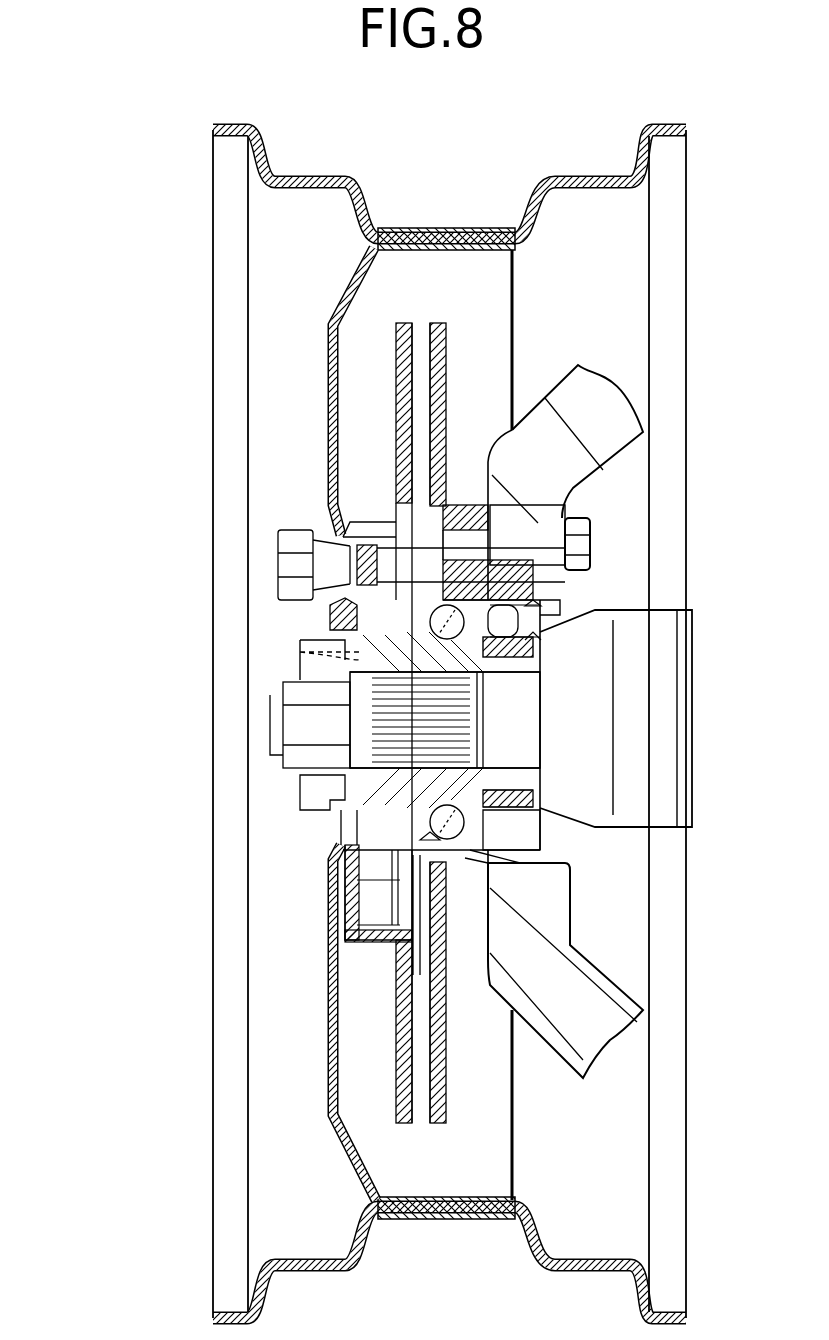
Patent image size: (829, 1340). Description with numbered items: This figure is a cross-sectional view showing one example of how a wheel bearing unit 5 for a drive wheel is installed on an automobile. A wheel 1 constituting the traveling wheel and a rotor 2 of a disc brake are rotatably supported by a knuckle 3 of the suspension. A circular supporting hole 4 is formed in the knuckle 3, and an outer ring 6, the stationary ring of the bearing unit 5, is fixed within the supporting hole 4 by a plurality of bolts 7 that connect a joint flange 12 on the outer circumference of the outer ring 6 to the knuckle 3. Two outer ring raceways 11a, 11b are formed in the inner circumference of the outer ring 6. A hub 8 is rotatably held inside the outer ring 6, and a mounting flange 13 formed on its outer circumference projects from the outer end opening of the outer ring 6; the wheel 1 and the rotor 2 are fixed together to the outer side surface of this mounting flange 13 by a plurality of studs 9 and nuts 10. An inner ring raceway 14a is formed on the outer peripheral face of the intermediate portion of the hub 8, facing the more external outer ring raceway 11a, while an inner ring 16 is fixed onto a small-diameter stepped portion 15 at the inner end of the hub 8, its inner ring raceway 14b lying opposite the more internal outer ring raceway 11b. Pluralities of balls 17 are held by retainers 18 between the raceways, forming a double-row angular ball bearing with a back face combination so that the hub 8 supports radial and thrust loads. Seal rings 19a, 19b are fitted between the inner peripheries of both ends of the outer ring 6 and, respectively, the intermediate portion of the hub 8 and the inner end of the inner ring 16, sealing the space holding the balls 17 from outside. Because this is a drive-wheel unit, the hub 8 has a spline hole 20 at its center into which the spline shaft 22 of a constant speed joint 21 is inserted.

The wheel 1 is at (332, 178).
The rotor 2 is at (447, 355).
The knuckle 3 is at (604, 402).
The supporting hole 4 is at (560, 858).
The bearing unit 5 is at (330, 846).
The outer ring 6 is at (462, 935).
The bolts 7 is at (585, 512).
The hub 8 is at (330, 616).
The studs 9 is at (345, 520).
The nuts 10 is at (290, 560).
The outer ring raceway 11a is at (335, 605).
The outer ring raceway 11b is at (568, 612).
The joint flange 12 is at (470, 505).
The mounting flange 13 is at (342, 890).
The inner ring raceway 14a is at (330, 790).
The inner ring raceway 14b is at (548, 830).
The small-diameter stepped portion 15 is at (545, 660).
The inner ring 16 is at (540, 632).
The balls 17 is at (420, 475).
The retainers 18 is at (300, 656).
The seal ring 19a is at (425, 836).
The seal ring 19b is at (560, 595).
The spline hole 20 is at (300, 745).
The constant speed joint 21 is at (660, 688).
The spline shaft 22 is at (355, 712).